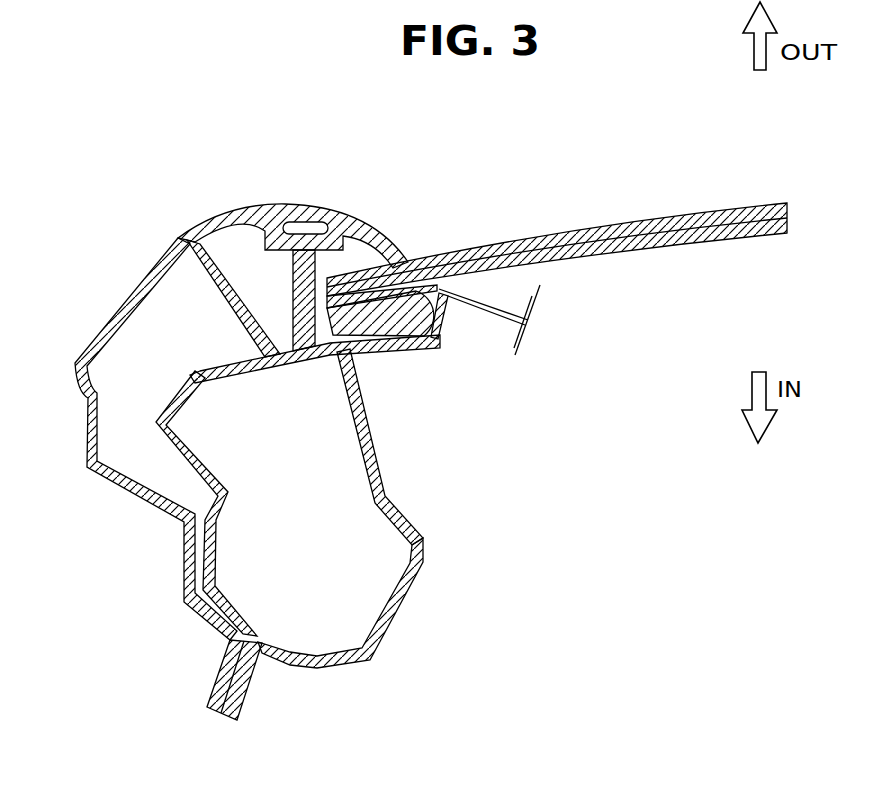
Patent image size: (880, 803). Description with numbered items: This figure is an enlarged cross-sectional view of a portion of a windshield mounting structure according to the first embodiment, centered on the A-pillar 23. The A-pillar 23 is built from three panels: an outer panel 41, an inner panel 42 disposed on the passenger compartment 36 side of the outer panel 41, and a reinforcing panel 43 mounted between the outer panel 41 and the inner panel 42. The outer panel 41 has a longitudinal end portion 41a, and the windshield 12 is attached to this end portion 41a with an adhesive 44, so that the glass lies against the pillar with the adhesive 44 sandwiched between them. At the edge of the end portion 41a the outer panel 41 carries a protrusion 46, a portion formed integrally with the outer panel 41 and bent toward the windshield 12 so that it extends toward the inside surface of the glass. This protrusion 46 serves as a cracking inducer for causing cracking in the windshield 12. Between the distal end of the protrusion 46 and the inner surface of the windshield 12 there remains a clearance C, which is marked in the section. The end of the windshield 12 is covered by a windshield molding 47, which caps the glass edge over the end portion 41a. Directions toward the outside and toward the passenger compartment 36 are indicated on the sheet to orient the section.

The windshield 12 is at (575, 237).
The A-pillar 23 is at (397, 617).
The passenger compartment 36 is at (645, 568).
The outer panel 41 is at (137, 277).
The end portion 41a is at (372, 337).
The inner panel 42 is at (377, 475).
The reinforcing panel 43 is at (212, 467).
The adhesive 44 is at (400, 350).
The protrusion 46 is at (444, 305).
The windshield molding 47 is at (303, 205).
The clearance C is at (496, 320).